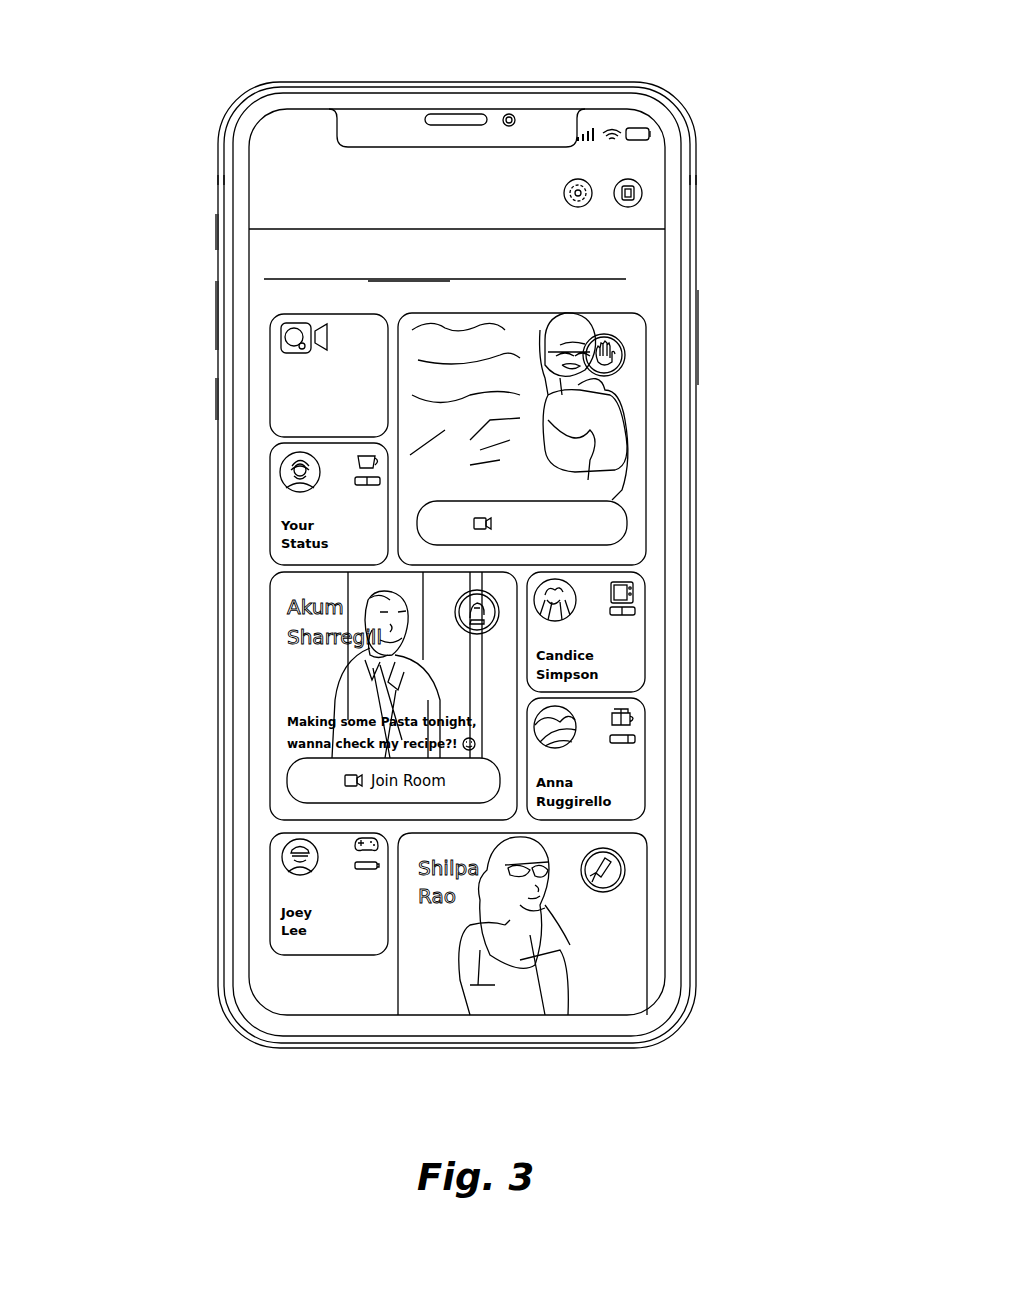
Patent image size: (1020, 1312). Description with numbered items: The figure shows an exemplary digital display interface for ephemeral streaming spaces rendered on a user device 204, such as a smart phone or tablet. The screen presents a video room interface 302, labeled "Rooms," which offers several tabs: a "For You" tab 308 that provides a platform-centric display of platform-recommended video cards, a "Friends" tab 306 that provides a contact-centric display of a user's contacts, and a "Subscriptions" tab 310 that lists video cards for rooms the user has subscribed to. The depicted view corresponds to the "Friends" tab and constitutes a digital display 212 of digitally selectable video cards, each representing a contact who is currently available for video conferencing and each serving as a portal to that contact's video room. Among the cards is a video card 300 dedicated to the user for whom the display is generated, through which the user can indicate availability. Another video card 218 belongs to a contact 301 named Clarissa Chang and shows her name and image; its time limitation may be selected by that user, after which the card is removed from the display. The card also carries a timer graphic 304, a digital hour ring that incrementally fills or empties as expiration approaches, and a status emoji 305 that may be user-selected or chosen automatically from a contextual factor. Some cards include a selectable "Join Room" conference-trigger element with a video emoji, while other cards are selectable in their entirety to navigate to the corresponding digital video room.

The user device 204 is at (150, 166).
The digital display 212 is at (347, 162).
The video card 218 is at (600, 343).
The video card 300 is at (280, 409).
The contact 301 is at (490, 332).
The video room interface 302 is at (668, 700).
The timer graphic 304 is at (691, 384).
The status emoji 305 is at (608, 354).
The Friends tab 306 is at (421, 240).
The For You tab 308 is at (303, 238).
The Subscriptions tab 310 is at (593, 240).